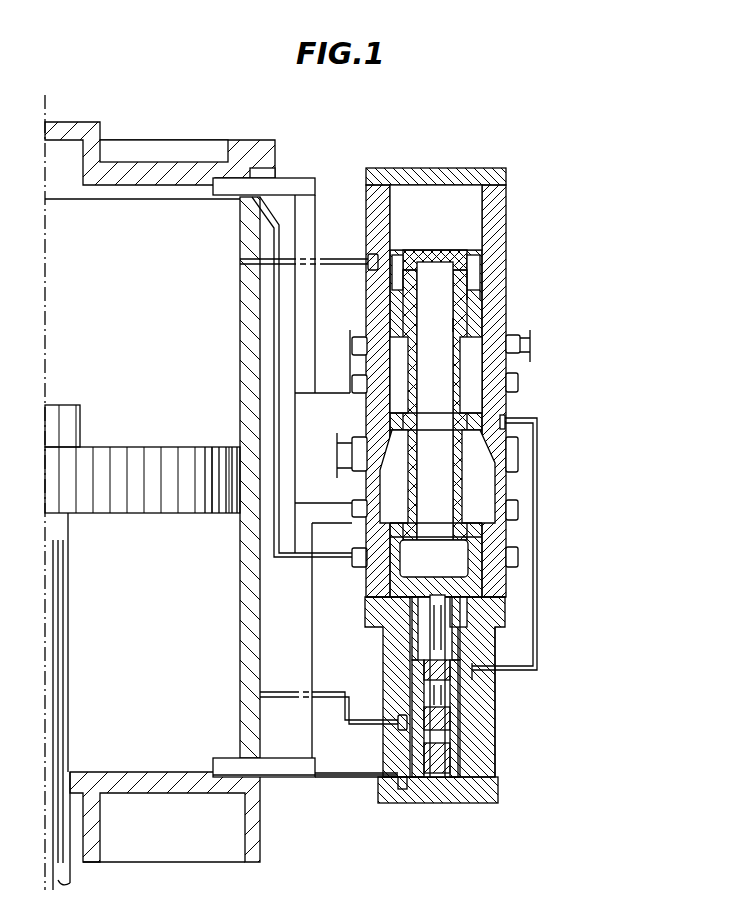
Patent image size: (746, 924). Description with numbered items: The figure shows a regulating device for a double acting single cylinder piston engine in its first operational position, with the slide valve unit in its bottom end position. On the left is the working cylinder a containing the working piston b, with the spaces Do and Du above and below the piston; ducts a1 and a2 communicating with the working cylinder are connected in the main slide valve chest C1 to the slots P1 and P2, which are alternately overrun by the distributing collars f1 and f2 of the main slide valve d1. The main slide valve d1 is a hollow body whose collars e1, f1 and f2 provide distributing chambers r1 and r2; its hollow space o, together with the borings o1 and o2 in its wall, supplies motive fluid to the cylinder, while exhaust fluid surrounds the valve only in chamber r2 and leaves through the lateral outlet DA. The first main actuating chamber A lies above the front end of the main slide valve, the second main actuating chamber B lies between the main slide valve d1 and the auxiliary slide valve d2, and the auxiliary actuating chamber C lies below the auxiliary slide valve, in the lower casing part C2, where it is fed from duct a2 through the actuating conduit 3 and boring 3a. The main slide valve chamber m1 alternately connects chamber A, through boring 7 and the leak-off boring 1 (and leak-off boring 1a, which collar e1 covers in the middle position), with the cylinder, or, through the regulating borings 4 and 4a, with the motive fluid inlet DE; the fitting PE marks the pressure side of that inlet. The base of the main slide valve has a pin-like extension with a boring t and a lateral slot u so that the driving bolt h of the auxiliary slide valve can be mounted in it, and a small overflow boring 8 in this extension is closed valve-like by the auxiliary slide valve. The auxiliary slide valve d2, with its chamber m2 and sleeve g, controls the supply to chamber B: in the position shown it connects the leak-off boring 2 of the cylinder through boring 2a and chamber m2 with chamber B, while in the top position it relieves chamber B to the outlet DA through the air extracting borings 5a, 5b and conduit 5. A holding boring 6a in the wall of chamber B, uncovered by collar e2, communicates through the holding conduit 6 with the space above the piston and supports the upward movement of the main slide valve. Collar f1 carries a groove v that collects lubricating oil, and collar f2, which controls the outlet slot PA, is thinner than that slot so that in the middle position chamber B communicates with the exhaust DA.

The working cylinder a is at (243, 350).
The working piston b is at (188, 497).
The upper chamber Do is at (130, 258).
The lower chamber Du is at (130, 654).
The duct a1 is at (300, 188).
The duct a2 is at (282, 776).
The leak-off boring 1 is at (341, 262).
The leak-off boring 1a is at (380, 230).
The leak-off boring 2 is at (273, 692).
The boring 2a is at (398, 738).
The actuating conduit 3 is at (362, 777).
The boring 3a is at (398, 797).
The fresh motive fluid regulating boring 4 is at (505, 296).
The fresh motive fluid regulating boring 4a is at (505, 268).
The conduit 5 is at (537, 470).
The air extracting boring 5a is at (497, 680).
The air extracting boring 5b is at (505, 407).
The holding conduit 6 is at (280, 405).
The motive fluid holding boring 6a is at (378, 573).
The boring 7 is at (400, 275).
The overflow boring 8 is at (383, 600).
The first main actuating chamber A is at (445, 200).
The second main actuating chamber B is at (505, 595).
The auxiliary actuating chamber C is at (498, 757).
The main slide valve chest C1 is at (500, 233).
The lower valve housing C2 is at (497, 707).
The lateral outlet DA is at (350, 455).
The motive fluid inlet DE is at (580, 345).
The pressure inlet port PE is at (512, 362).
The slot P1 is at (515, 382).
The slot P2 is at (518, 510).
The outlet slot PA is at (518, 450).
The main slide valve d1 is at (458, 462).
The auxiliary slide valve d2 is at (470, 738).
The collar e1 is at (470, 325).
The collar e2 is at (518, 550).
The distributing collar f1 is at (455, 425).
The distributing collar f2 is at (455, 537).
The sleeve g is at (425, 675).
The driving bolt h is at (505, 608).
The main slide valve chamber m1 is at (472, 295).
The chamber m2 is at (415, 693).
The hollow space o is at (435, 361).
The boring o1 is at (454, 397).
The boring o2 is at (475, 560).
The distributing chamber r1 is at (471, 375).
The distributing chamber r2 is at (476, 496).
The boring t is at (395, 627).
The lateral slot u is at (462, 638).
The groove v is at (405, 408).